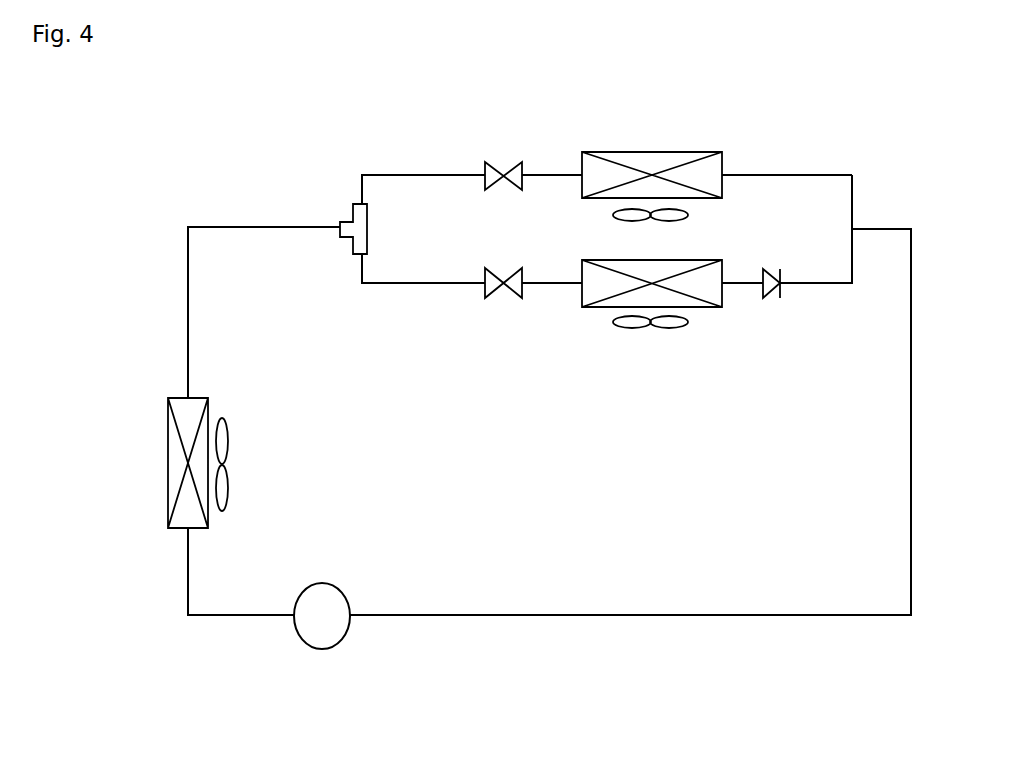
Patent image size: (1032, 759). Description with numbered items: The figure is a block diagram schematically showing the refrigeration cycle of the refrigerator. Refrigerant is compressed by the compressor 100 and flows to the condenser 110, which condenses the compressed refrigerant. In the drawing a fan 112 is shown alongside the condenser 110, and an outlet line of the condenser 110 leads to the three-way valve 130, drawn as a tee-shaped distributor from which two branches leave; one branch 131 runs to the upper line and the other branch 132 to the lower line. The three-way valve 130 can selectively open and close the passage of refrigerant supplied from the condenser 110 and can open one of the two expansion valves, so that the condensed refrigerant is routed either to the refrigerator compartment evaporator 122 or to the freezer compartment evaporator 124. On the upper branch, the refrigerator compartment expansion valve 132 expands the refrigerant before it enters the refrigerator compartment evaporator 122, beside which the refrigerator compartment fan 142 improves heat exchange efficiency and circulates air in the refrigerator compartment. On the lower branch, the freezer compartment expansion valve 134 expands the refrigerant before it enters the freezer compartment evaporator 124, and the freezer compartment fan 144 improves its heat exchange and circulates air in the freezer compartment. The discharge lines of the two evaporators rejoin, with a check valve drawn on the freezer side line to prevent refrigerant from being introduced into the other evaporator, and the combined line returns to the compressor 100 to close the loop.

The compressor 100 is at (336, 647).
The condenser 110 is at (168, 448).
The fan 112 is at (228, 457).
The refrigerator compartment evaporator 122 is at (650, 152).
The freezer compartment evaporator 124 is at (598, 309).
The 3-way valve 130 is at (340, 223).
The first branch pipe 131 is at (357, 202).
The refrigerator compartment expansion valve 132 is at (358, 256).
The freezer compartment expansion valve 134 is at (490, 300).
The refrigerator compartment fan 142 is at (686, 216).
The freezer compartment fan 144 is at (672, 330).